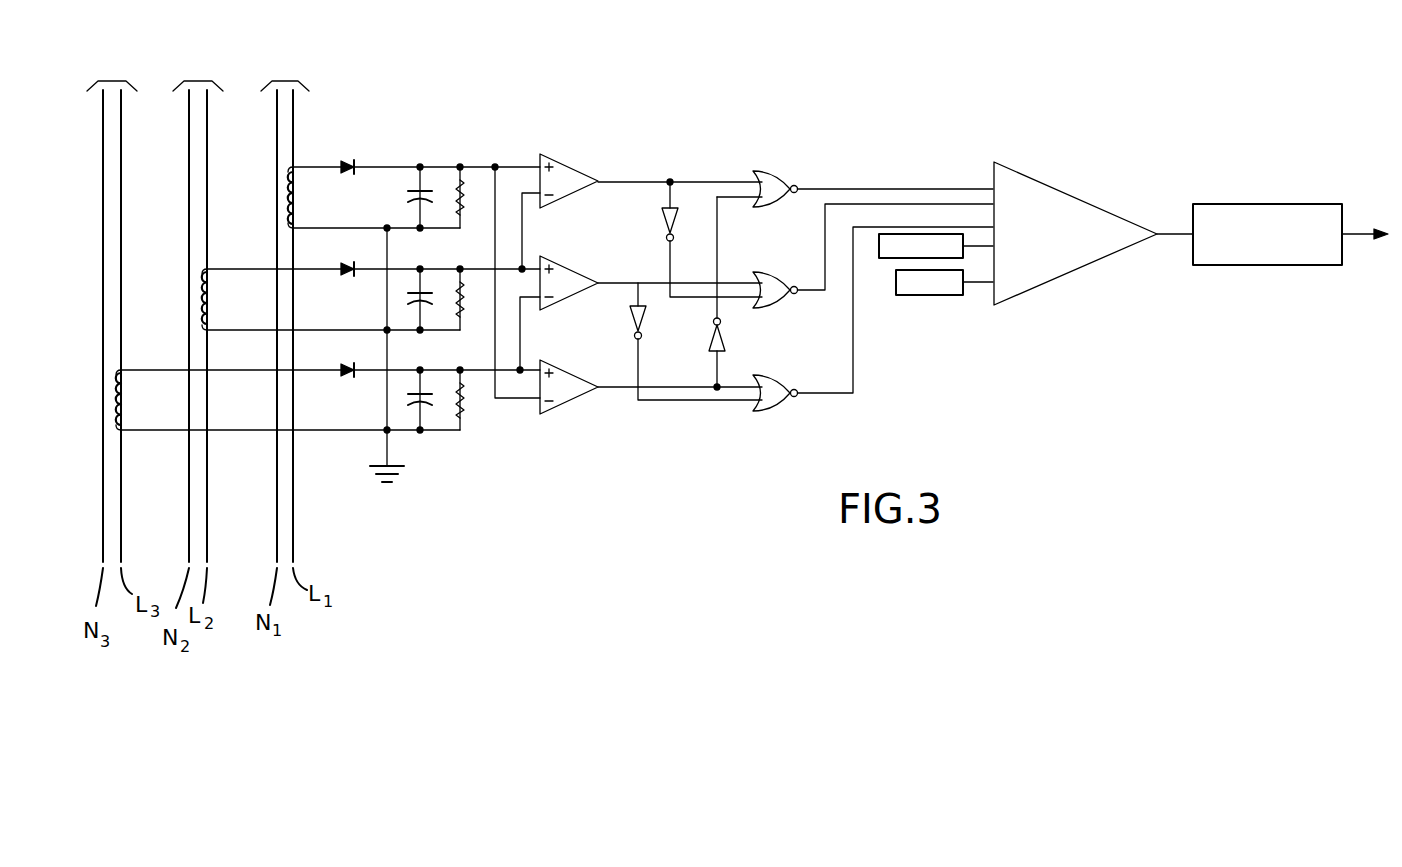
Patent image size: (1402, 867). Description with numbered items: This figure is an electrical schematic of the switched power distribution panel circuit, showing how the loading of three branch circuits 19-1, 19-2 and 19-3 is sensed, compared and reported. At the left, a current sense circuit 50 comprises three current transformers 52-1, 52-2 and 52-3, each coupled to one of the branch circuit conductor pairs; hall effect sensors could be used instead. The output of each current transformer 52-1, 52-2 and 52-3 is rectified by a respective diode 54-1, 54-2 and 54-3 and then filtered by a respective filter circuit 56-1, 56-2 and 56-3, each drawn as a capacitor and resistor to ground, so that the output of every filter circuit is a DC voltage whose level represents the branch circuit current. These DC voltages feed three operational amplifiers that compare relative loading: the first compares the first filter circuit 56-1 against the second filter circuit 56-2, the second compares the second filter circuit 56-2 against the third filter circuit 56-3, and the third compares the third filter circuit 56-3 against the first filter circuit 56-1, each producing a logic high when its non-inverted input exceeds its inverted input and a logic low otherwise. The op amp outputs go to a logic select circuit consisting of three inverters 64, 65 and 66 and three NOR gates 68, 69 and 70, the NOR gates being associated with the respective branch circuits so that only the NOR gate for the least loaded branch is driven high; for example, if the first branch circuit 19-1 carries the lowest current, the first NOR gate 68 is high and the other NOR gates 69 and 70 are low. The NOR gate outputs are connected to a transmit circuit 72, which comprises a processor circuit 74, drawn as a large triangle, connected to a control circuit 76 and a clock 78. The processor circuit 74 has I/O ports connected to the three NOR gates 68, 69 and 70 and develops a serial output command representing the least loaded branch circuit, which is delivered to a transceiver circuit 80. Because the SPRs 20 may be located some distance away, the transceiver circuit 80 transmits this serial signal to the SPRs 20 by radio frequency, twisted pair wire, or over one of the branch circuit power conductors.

The third branch circuit 19-3 is at (111, 327).
The second branch circuit 19-2 is at (203, 328).
The first branch circuit 19-1 is at (290, 327).
The current sense circuit 50 is at (348, 101).
The first current transformer 52-1 is at (302, 158).
The second current transformer 52-2 is at (215, 258).
The third current transformer 52-3 is at (128, 355).
The first diode 54-1 is at (363, 160).
The second diode 54-2 is at (347, 265).
The third diode 54-3 is at (347, 367).
The first filter circuit 56-1 is at (448, 167).
The second filter circuit 56-2 is at (450, 313).
The third filter circuit 56-3 is at (444, 431).
The inverter 64 is at (662, 216).
The inverter 65 is at (727, 340).
The inverter 66 is at (645, 316).
The first NOR gate 68 is at (781, 172).
The second NOR gate 69 is at (767, 274).
The third NOR gate 70 is at (777, 375).
The transmit circuit 72 is at (1074, 183).
The processor circuit 74 is at (1077, 197).
The control circuit 76 is at (877, 236).
The clock 78 is at (924, 297).
The transceiver circuit 80 is at (1226, 204).
The SPRs 20 is at (1387, 182).